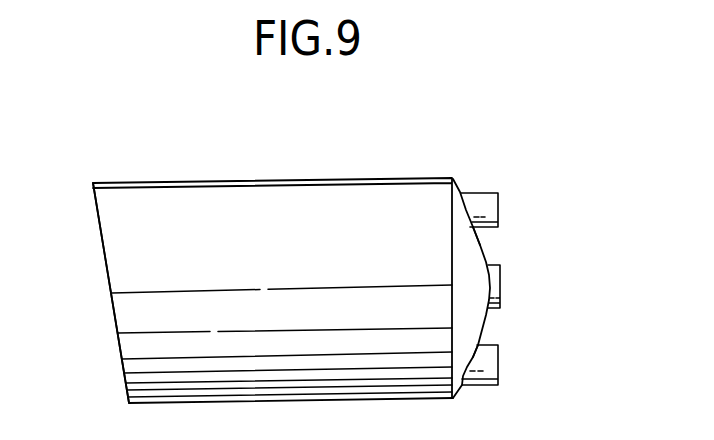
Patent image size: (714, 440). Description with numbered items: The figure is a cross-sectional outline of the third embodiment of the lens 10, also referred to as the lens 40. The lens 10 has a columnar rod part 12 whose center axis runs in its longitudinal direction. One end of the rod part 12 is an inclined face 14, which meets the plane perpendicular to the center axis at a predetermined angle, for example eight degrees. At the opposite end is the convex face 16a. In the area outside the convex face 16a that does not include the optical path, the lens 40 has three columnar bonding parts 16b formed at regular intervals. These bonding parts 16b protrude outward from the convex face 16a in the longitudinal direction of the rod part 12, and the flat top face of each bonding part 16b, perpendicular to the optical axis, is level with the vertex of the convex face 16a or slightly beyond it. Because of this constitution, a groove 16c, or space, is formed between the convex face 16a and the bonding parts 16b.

The lens 10 is at (218, 180).
The rod part 12 is at (285, 193).
The inclined face 14 is at (111, 303).
The lens 40 is at (526, 235).
The convex face 16a is at (486, 258).
The bonding parts 16b is at (498, 208).
The groove 16c is at (480, 236).